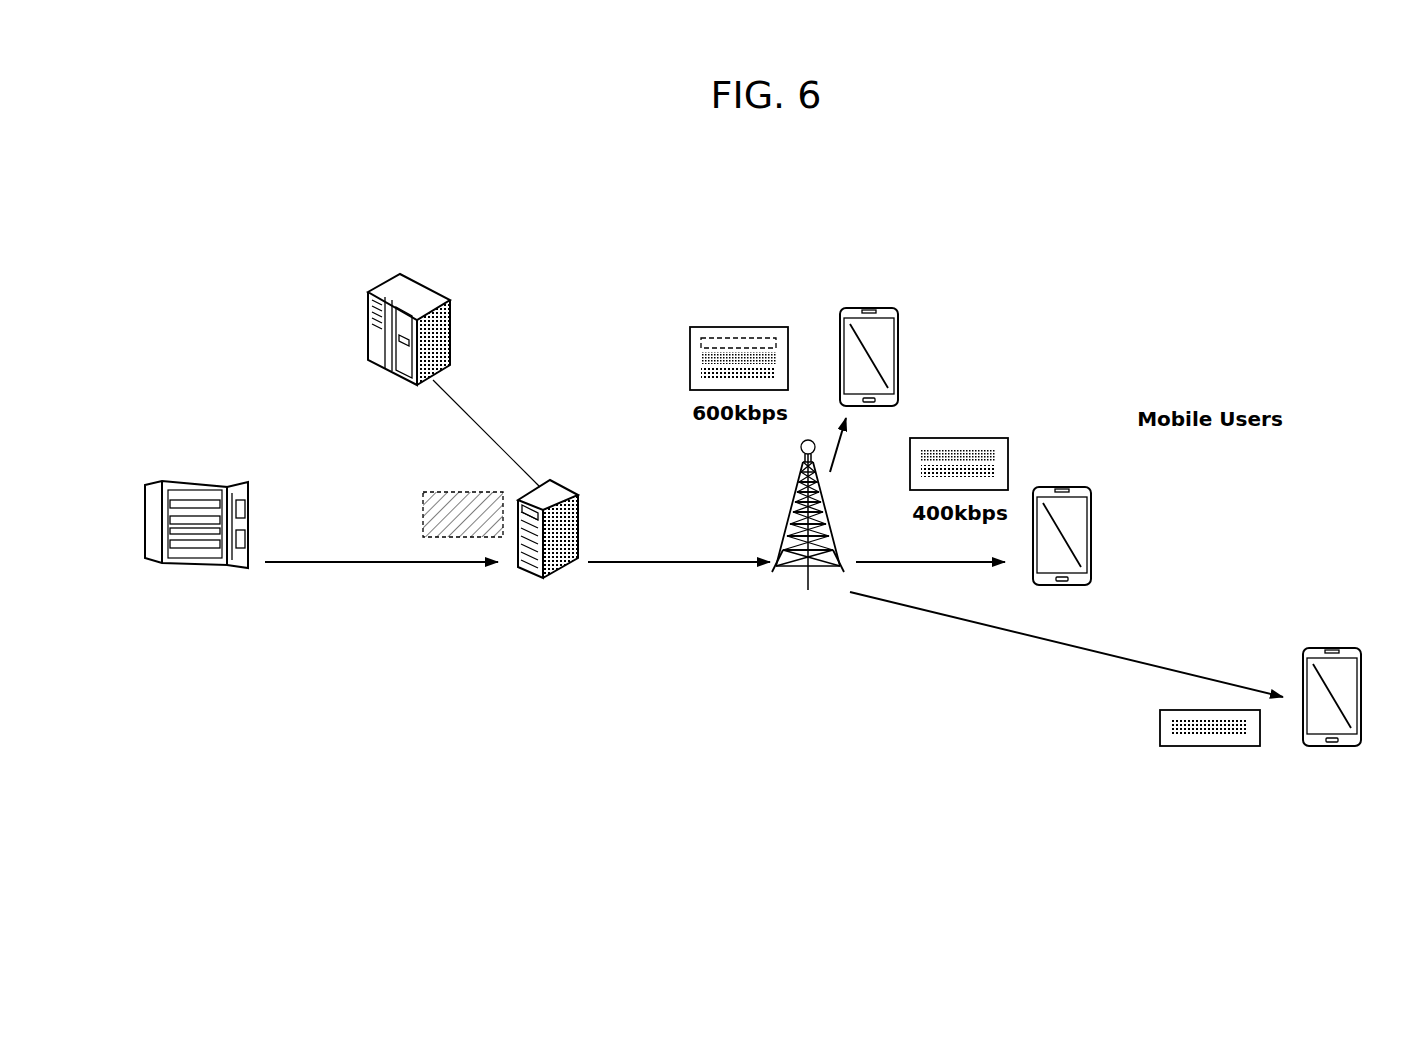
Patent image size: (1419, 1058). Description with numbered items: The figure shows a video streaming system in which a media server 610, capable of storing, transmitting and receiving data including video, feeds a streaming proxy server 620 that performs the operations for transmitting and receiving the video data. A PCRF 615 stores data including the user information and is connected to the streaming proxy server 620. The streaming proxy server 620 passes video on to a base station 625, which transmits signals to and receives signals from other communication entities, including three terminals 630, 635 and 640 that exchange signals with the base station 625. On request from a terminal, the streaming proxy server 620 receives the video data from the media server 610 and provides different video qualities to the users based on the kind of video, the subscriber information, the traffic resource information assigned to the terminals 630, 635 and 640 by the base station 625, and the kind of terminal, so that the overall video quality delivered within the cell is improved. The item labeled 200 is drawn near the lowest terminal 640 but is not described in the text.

The media server 610 is at (186, 478).
The PCRF 615 is at (428, 290).
The streaming proxy server 620 is at (558, 482).
The base station 625 is at (812, 645).
The terminal 630 is at (888, 306).
The terminal 635 is at (1095, 538).
The terminal 640 is at (1330, 645).
The data packet 200 is at (1210, 745).